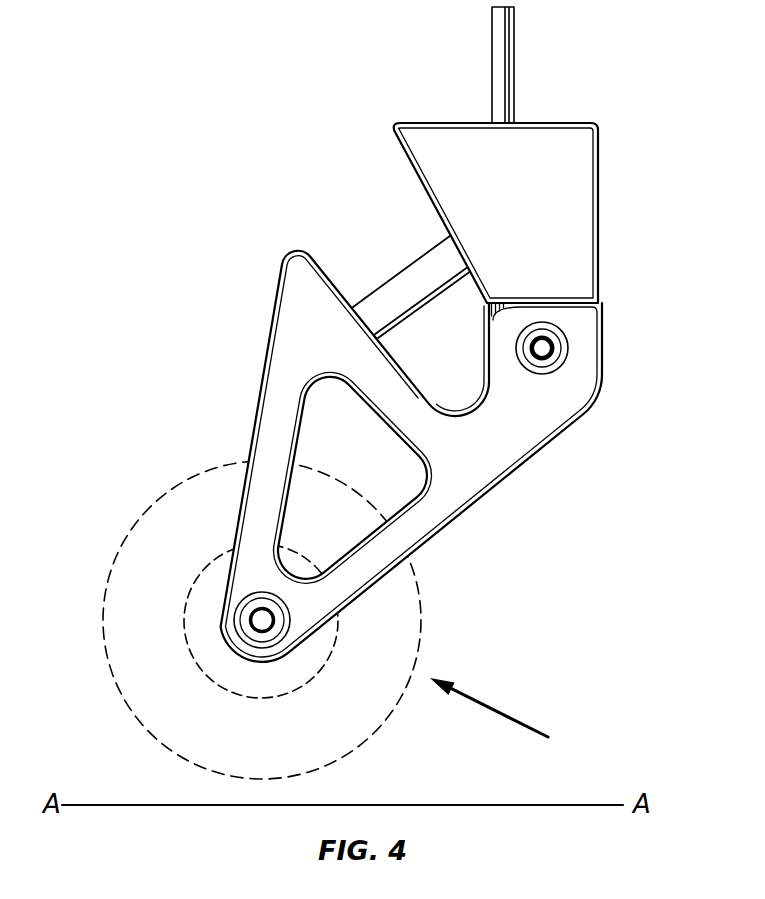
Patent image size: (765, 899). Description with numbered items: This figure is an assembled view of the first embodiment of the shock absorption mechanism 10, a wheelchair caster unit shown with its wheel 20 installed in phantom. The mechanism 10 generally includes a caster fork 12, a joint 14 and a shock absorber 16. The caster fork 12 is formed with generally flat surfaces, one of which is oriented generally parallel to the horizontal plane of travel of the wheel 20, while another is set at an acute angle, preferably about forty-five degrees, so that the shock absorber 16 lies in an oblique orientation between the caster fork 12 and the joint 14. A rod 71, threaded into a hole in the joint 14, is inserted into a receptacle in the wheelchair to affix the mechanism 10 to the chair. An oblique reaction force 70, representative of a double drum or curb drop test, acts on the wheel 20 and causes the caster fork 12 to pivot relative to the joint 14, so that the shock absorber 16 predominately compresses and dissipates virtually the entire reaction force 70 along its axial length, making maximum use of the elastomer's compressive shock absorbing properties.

The shock absorption mechanism 10 is at (262, 92).
The caster fork 12 is at (540, 433).
The joint 14 is at (563, 205).
The shock absorber 16 is at (421, 272).
The wheel 20 is at (147, 537).
The reaction force 70 is at (511, 717).
The rod 71 is at (516, 63).